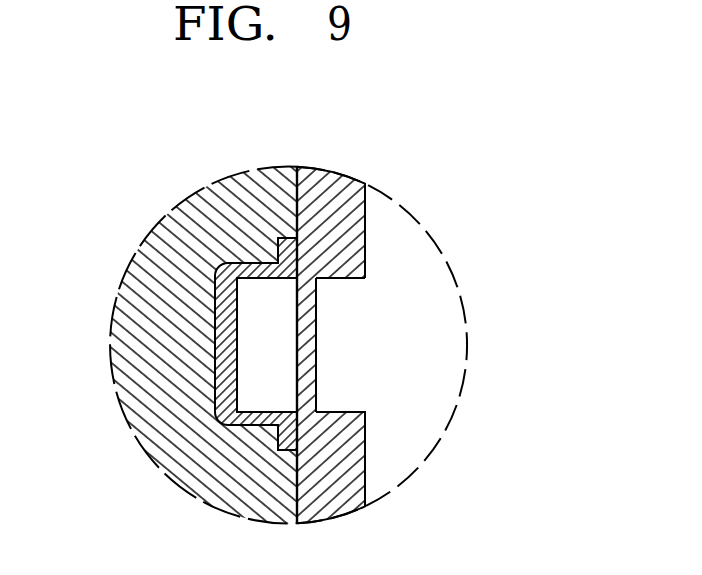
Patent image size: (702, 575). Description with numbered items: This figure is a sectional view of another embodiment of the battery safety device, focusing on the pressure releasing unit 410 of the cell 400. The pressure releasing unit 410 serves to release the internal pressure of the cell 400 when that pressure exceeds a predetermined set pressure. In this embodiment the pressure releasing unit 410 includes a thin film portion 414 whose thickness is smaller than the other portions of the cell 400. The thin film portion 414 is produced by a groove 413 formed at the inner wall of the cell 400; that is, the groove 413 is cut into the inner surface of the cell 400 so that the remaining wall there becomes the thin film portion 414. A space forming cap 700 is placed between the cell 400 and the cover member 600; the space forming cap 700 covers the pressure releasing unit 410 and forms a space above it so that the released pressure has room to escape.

The cell 400 is at (373, 228).
The pressure releasing unit 410 is at (324, 387).
The groove 413 is at (337, 280).
The thin film portion 414 is at (314, 340).
The cover member 600 is at (310, 484).
The space forming cap 700 is at (215, 366).